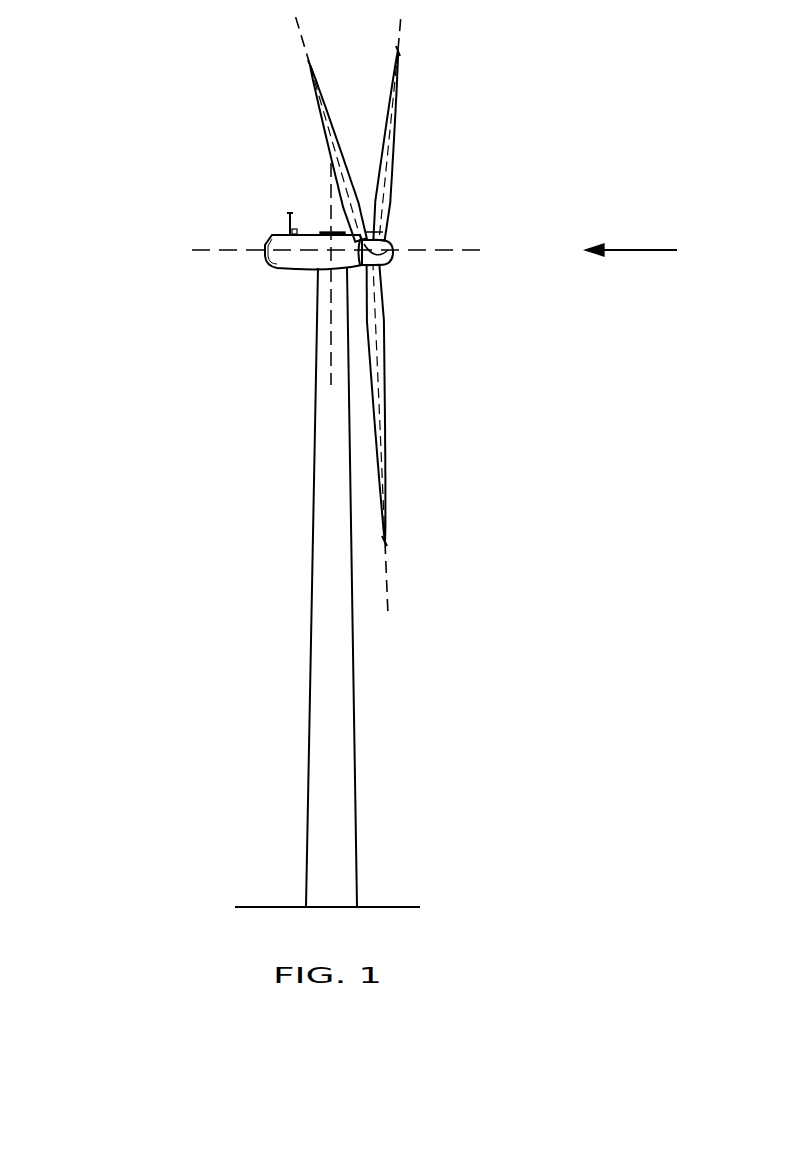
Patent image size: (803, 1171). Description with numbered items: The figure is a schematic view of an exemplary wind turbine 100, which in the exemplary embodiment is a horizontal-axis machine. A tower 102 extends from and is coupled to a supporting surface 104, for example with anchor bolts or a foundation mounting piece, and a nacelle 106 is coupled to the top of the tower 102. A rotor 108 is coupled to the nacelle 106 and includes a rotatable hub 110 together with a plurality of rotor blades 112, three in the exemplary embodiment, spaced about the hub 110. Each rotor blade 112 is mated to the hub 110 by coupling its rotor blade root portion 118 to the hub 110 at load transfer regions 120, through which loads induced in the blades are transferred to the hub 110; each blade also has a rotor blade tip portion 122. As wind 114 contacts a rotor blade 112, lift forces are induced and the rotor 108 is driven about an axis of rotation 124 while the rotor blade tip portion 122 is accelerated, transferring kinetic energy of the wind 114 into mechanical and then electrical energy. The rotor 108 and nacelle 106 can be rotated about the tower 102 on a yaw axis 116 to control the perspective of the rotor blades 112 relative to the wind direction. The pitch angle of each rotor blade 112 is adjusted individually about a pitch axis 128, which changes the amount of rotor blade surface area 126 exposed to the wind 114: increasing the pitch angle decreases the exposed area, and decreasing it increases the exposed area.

The wind turbine 100 is at (135, 56).
The tower 102 is at (308, 722).
The supporting surface 104 is at (273, 906).
The nacelle 106 is at (292, 270).
The rotor 108 is at (407, 147).
The rotatable hub 110 is at (392, 246).
The rotor blades 112 is at (328, 140).
The wind 114 is at (640, 249).
The yaw axis 116 is at (330, 205).
The rotor blade root portion 118 is at (383, 342).
The load transfer regions 120 is at (385, 236).
The rotor blade tip portion 122 is at (311, 79).
The axis of rotation 124 is at (453, 252).
The rotor blade surface area 126 is at (376, 226).
The pitch axis 128 is at (292, 29).